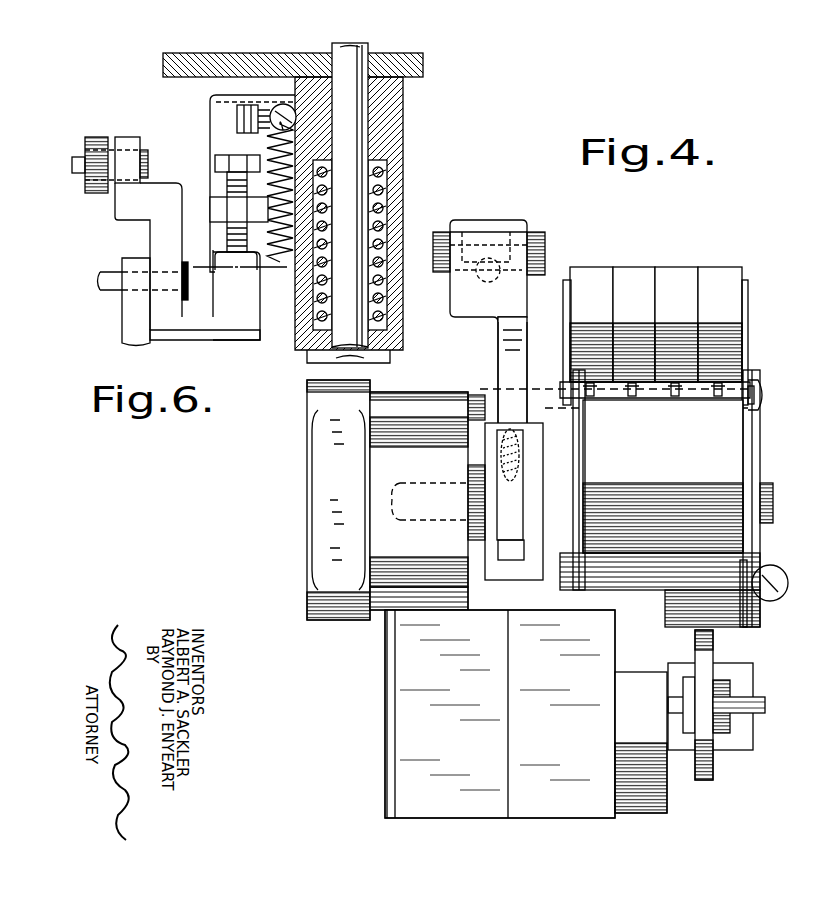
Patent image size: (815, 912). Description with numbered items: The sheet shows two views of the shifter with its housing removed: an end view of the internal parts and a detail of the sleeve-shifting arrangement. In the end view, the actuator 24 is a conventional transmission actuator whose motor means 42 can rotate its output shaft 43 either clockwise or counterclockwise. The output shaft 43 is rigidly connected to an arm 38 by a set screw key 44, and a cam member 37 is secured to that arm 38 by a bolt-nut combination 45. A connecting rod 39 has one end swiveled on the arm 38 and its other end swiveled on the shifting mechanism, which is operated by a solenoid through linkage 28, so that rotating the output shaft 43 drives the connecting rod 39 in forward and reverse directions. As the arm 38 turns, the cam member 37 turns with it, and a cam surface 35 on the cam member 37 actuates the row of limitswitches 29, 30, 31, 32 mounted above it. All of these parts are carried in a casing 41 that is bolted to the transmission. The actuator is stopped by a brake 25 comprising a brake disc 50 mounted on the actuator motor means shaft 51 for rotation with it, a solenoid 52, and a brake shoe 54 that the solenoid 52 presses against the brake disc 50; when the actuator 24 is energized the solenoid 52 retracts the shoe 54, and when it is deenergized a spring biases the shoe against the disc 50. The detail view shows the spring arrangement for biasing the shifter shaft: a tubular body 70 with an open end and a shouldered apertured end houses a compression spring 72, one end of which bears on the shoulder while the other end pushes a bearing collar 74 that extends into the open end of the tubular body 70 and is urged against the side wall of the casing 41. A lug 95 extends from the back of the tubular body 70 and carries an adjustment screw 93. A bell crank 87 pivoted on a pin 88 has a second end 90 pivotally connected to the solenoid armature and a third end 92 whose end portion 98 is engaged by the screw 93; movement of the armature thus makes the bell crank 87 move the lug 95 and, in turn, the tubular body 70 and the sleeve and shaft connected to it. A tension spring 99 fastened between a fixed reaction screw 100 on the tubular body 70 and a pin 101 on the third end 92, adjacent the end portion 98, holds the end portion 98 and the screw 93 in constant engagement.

In FIG. 4, the actuator 24 is at (455, 829).
In FIG. 4, the brake 25 is at (739, 661).
In FIG. 6, the linkage 28 is at (284, 357).
In FIG. 4, the limitswitch 29 is at (722, 270).
In FIG. 4, the limitswitch 30 is at (676, 270).
In FIG. 4, the limitswitch 31 is at (632, 270).
In FIG. 4, the limitswitch 32 is at (588, 270).
In FIG. 4, the cam surface 35 is at (668, 392).
In FIG. 4, the cam member 37 is at (672, 470).
In FIG. 4, the arm 38 is at (505, 335).
In FIG. 4, the connecting rod 39 is at (488, 222).
In FIG. 6, the casing 41 is at (420, 68).
In FIG. 4, the motor means 42 is at (545, 793).
In FIG. 4, the output shaft 43 is at (768, 500).
In FIG. 4, the set screw key 44 is at (505, 440).
In FIG. 4, the bolt-nut combination 45 is at (758, 392).
In FIG. 4, the brake disc 50 is at (704, 765).
In FIG. 4, the actuator motor means shaft 51 is at (760, 705).
In FIG. 4, the solenoid 52 is at (745, 739).
In FIG. 4, the brake shoe 54 is at (690, 680).
In FIG. 6, the tubular body 70 is at (215, 110).
In FIG. 6, the compression spring 72 is at (385, 193).
In FIG. 6, the bearing collar 74 is at (372, 360).
In FIG. 6, the bell crank 87 is at (139, 238).
In FIG. 6, the pin 88 is at (108, 290).
In FIG. 6, the second end 90 is at (148, 150).
In FIG. 6, the third end 92 is at (240, 325).
In FIG. 6, the adjustment screw 93 is at (225, 224).
In FIG. 6, the lug 95 is at (213, 192).
In FIG. 6, the end portion 98 is at (214, 254).
In FIG. 6, the tension spring 99 is at (268, 152).
In FIG. 6, the reaction screw 100 is at (287, 105).
In FIG. 6, the pin 101 is at (272, 272).